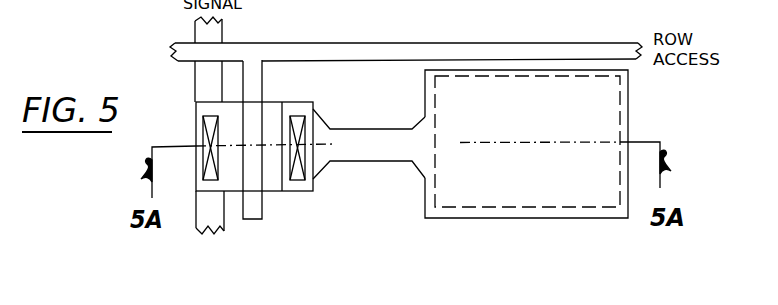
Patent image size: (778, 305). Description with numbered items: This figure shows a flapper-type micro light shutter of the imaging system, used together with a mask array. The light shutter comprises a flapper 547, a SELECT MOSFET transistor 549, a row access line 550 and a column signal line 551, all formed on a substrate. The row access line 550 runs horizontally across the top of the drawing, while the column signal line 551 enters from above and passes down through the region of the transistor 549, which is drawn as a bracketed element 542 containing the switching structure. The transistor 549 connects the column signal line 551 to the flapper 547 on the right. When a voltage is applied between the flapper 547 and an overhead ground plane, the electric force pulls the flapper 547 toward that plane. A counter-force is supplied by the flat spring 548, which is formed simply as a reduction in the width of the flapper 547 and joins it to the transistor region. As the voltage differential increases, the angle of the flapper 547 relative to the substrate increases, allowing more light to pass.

The row access line 550 is at (329, 50).
The column signal line 551 is at (205, 35).
The SELECT MOSFET transistor 549 is at (279, 145).
The switching device 542 is at (188, 236).
The flat spring 548 is at (363, 138).
The flapper 547 is at (572, 218).